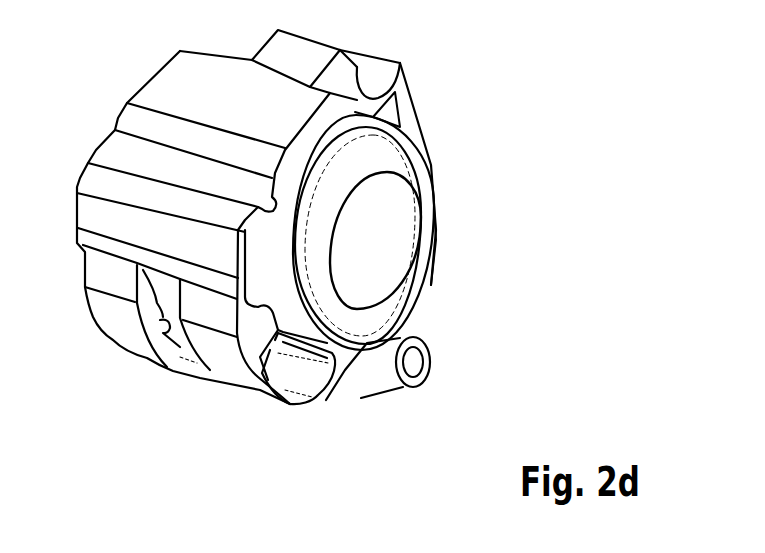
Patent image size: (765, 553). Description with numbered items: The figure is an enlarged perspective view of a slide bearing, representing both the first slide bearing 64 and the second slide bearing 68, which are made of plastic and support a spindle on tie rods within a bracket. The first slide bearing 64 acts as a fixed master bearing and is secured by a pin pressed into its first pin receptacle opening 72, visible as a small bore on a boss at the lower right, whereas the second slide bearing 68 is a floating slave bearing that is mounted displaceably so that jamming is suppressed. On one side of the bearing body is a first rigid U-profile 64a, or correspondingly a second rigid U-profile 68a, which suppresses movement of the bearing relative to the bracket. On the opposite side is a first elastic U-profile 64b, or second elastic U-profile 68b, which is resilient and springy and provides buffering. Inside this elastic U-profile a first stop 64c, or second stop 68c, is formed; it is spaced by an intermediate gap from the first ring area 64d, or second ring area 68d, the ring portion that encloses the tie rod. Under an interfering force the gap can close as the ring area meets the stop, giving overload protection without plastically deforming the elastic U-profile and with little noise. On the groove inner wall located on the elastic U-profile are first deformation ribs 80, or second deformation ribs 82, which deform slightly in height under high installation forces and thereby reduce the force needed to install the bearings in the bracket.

The first slide bearing 64 is at (422, 233).
The second slide bearing 68 is at (480, 153).
The first rigid U-profile 64a is at (451, 109).
The second rigid U-profile 68a is at (410, 112).
The first elastic U-profile 64b is at (348, 390).
The second elastic U-profile 68b is at (307, 400).
The first stop 64c is at (260, 392).
The second stop 68c is at (262, 333).
The first ring area 64d is at (492, 245).
The second ring area 68d is at (422, 233).
The first pin receptacle opening 72 is at (413, 363).
The first deformation ribs 80 is at (136, 326).
The second deformation ribs 82 is at (168, 290).